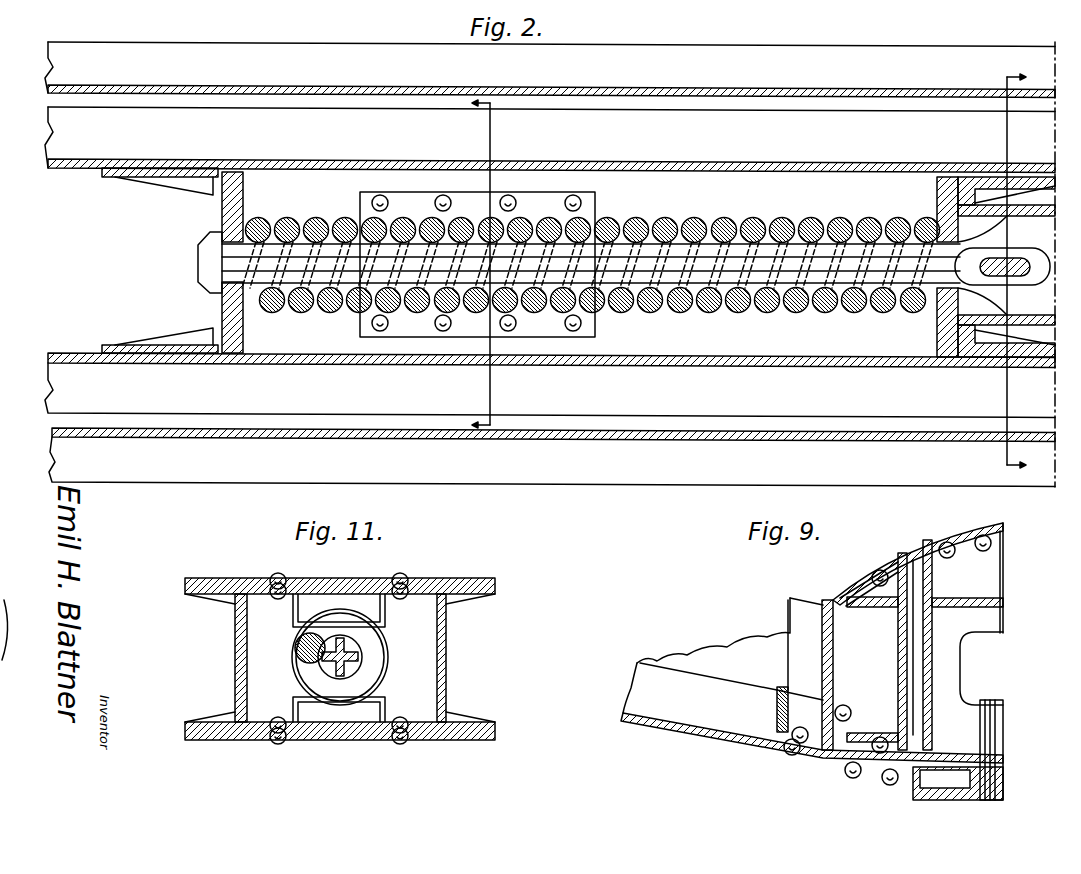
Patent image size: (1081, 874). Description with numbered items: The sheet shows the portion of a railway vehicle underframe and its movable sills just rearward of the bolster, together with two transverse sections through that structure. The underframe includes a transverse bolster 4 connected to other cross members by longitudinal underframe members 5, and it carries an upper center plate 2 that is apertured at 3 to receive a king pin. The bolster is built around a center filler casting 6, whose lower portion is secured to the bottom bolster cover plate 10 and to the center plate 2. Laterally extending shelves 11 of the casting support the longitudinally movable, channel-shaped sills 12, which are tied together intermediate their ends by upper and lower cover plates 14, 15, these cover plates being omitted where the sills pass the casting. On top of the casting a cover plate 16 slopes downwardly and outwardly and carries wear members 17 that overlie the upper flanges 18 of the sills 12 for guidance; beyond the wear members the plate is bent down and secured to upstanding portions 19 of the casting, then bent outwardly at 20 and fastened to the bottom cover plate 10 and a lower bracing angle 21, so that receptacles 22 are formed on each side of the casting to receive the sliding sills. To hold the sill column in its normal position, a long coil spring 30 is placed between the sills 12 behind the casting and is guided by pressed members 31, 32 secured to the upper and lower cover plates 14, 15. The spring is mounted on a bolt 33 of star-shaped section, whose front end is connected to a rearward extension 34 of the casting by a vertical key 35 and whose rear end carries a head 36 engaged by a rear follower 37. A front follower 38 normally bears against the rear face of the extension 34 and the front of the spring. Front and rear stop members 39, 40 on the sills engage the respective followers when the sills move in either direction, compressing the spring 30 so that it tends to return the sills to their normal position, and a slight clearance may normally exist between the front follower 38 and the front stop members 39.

In FIG. 9, the center plate 2 is at (912, 785).
In FIG. 9, the king pin aperture 3 is at (1004, 775).
In FIG. 9, the bolster 4 is at (652, 715).
In FIG. 2, the longitudinal underframe members 5 is at (712, 48).
In FIG. 2, the center filler casting 6 is at (1036, 324).
In FIG. 9, the center filler casting 6 is at (983, 635).
In FIG. 2, the bottom bolster cover plate 10 is at (995, 269).
In FIG. 9, the bottom bolster cover plate 10 is at (718, 745).
In FIG. 2, the shelves 11 is at (498, 265).
In FIG. 9, the shelves 11 is at (862, 770).
In FIG. 2, the movable sills 12 is at (690, 163).
In FIG. 11, the movable sills 12 is at (235, 655).
In FIG. 9, the movable sills 12 is at (898, 652).
In FIG. 11, the upper cover plate 14 is at (350, 580).
In FIG. 11, the lower cover plate 15 is at (343, 742).
In FIG. 9, the cover plate 16 is at (945, 528).
In FIG. 9, the wear members 17 is at (905, 552).
In FIG. 9, the upper flanges 18 is at (860, 607).
In FIG. 9, the upstanding portions 19 is at (848, 710).
In FIG. 9, the outwardly bent portion 20 is at (790, 752).
In FIG. 9, the lower bracing angle 21 is at (710, 675).
In FIG. 9, the receptacles 22 is at (822, 600).
In FIG. 2, the coil spring 30 is at (700, 218).
In FIG. 11, the coil spring 30 is at (296, 672).
In FIG. 11, the upper pressed member 31 is at (385, 610).
In FIG. 2, the lower pressed member 32 is at (595, 326).
In FIG. 11, the lower pressed member 32 is at (385, 705).
In FIG. 2, the bolt 33 is at (685, 315).
In FIG. 11, the bolt 33 is at (362, 657).
In FIG. 2, the rearward extension 34 is at (945, 310).
In FIG. 2, the vertical key 35 is at (1010, 258).
In FIG. 2, the head 36 is at (205, 250).
In FIG. 2, the rear follower 37 is at (222, 308).
In FIG. 2, the front follower 38 is at (937, 192).
In FIG. 2, the front stop members 39 is at (978, 176).
In FIG. 2, the rear stop members 40 is at (185, 180).